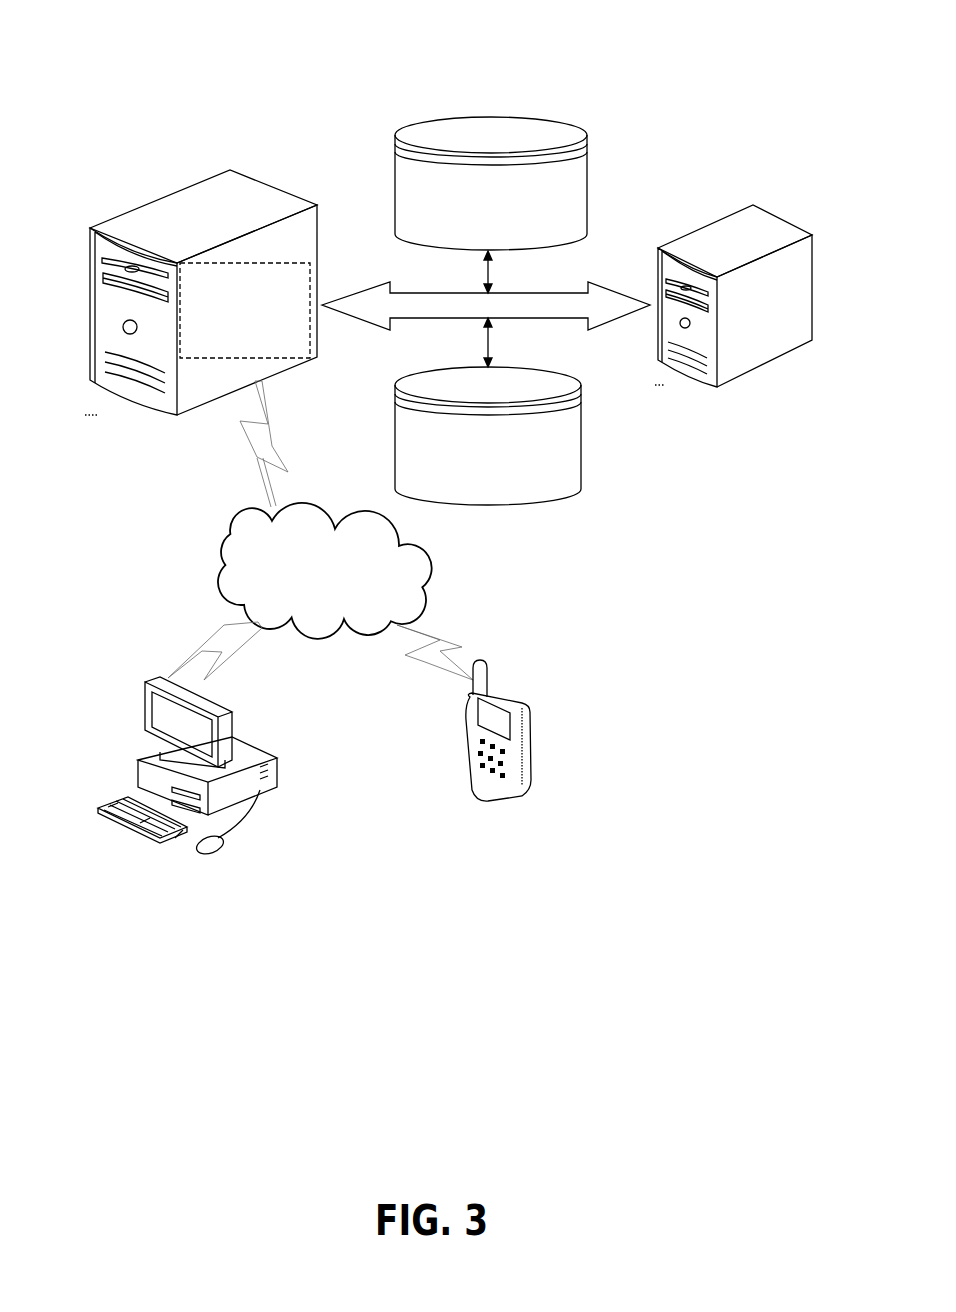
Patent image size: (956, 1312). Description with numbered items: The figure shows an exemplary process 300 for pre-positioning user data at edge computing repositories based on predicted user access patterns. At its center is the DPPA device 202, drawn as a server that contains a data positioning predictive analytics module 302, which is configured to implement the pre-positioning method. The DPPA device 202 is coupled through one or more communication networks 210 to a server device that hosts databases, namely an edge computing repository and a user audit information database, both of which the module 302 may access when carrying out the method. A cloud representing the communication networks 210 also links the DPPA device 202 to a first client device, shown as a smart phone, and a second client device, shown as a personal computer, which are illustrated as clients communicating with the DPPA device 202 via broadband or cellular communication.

The process 300 is at (290, 90).
The DPPA device 202 is at (168, 210).
The data positioning predictive analytics module 302 is at (245, 310).
The communication network(s) 210 is at (434, 445).